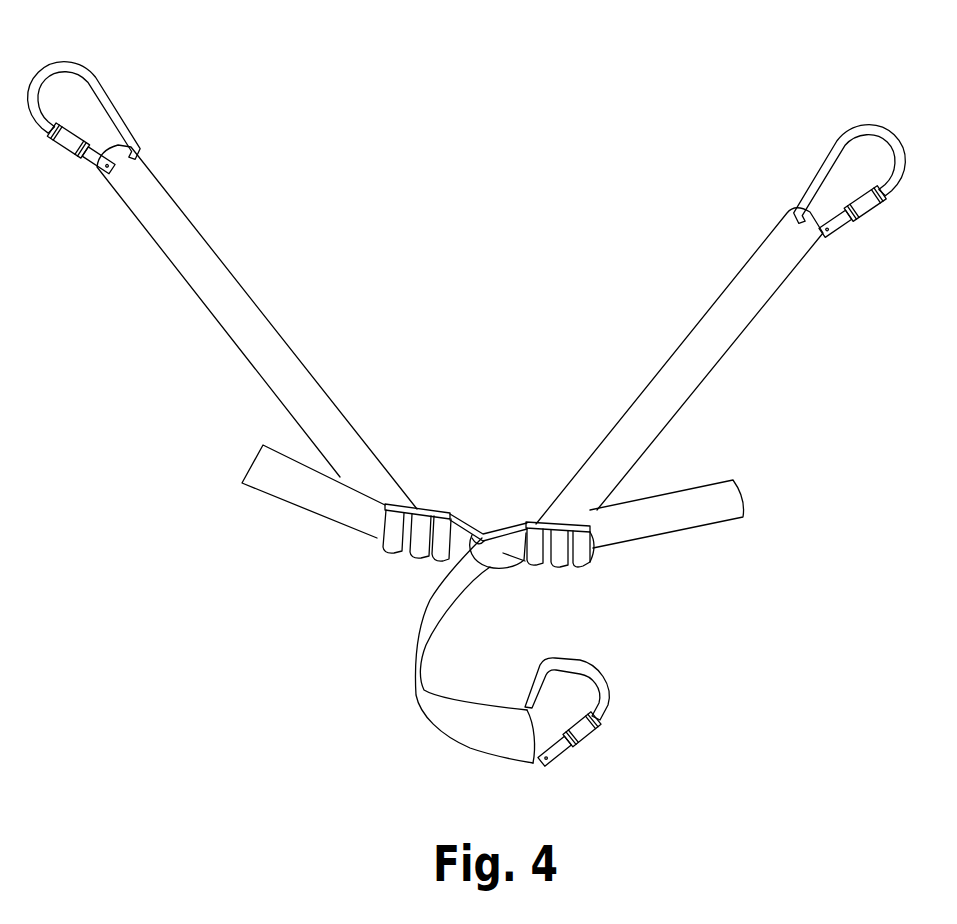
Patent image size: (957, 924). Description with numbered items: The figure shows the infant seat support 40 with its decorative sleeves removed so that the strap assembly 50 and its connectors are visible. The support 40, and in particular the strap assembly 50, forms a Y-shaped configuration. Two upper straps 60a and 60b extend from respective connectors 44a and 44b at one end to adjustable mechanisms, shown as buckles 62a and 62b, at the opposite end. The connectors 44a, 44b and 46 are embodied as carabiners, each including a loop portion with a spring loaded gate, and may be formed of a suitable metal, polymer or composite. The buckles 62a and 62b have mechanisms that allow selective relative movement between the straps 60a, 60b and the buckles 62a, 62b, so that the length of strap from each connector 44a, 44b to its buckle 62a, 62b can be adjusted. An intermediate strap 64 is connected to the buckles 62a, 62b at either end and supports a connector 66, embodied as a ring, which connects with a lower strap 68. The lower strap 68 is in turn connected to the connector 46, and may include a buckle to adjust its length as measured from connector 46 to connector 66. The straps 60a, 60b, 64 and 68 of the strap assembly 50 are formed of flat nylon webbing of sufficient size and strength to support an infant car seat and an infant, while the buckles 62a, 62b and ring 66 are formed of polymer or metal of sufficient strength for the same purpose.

The infant seat support 40 is at (347, 190).
The connector 44a is at (67, 78).
The connector 44b is at (850, 143).
The connector 46 is at (597, 683).
The strap assembly 50 is at (703, 518).
The upper strap 60a is at (222, 285).
The upper strap 60b is at (698, 323).
The buckle 62a is at (437, 510).
The buckle 62b is at (560, 523).
The intermediate strap 64 is at (505, 556).
The connector 66 is at (477, 533).
The lower strap 68 is at (432, 700).